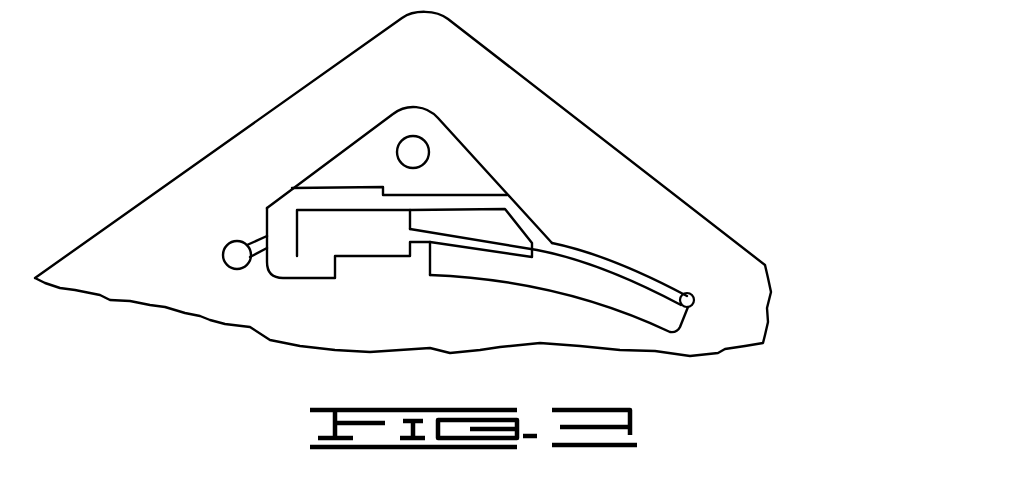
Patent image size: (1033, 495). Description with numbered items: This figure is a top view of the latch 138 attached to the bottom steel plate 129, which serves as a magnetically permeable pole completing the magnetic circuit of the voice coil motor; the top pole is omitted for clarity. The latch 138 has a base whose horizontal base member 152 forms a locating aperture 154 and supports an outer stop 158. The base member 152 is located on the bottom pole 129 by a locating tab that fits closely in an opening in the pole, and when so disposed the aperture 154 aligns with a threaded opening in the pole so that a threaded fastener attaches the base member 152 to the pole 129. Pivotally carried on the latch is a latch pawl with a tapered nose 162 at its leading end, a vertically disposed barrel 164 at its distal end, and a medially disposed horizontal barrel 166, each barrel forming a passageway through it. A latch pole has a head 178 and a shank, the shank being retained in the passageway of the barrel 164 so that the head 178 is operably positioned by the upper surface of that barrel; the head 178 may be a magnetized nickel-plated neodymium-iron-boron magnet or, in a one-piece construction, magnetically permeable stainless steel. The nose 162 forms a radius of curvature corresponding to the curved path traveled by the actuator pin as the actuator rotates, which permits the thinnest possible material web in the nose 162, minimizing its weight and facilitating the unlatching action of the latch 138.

The steel plate 129 is at (583, 163).
The latch 138 is at (416, 287).
The horizontal base member 152 is at (645, 302).
The locating aperture 154 is at (413, 145).
The outer stop 158 is at (695, 295).
The tapered nose 162 is at (518, 242).
The vertically disposed barrel 164 is at (233, 250).
The horizontal barrel 166 is at (370, 242).
The head 178 is at (232, 242).